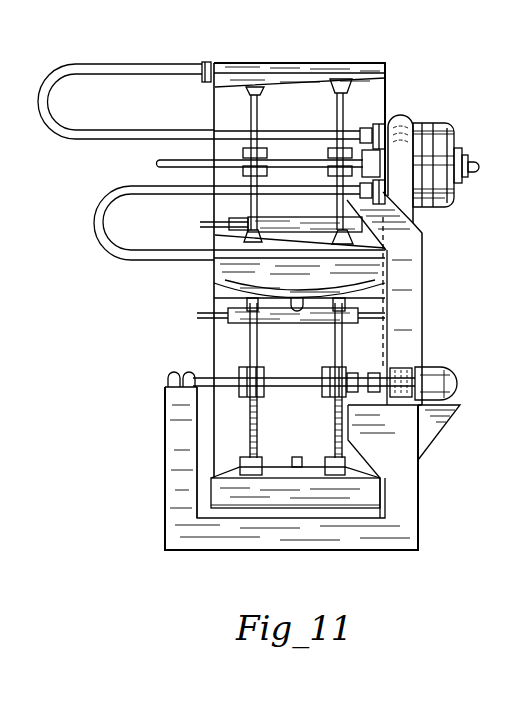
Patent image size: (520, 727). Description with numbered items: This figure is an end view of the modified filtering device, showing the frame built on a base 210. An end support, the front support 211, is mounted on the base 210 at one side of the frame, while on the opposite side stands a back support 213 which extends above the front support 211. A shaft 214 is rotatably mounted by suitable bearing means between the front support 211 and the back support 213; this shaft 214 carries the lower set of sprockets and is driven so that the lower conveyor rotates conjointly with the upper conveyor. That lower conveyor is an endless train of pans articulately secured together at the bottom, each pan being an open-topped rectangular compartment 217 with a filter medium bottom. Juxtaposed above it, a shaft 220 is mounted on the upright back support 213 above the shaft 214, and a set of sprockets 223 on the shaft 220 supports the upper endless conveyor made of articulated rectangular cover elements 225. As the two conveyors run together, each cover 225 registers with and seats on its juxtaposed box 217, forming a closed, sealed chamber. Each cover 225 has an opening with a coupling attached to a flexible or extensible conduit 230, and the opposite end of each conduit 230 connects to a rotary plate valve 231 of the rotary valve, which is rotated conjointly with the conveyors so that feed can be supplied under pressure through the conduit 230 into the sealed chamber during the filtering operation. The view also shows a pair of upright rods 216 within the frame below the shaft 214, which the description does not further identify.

The base 210 is at (212, 548).
The front support 211 is at (172, 438).
The back support 213 is at (403, 253).
The shaft 214 is at (283, 380).
The threaded rods 216 is at (330, 430).
The rectangular compartment 217 is at (232, 272).
The shaft 220 is at (290, 161).
The sprockets 223 is at (335, 97).
The cover elements 225 is at (230, 242).
The flexible conduit 230 is at (72, 137).
The rotary plate valve 231 is at (443, 135).